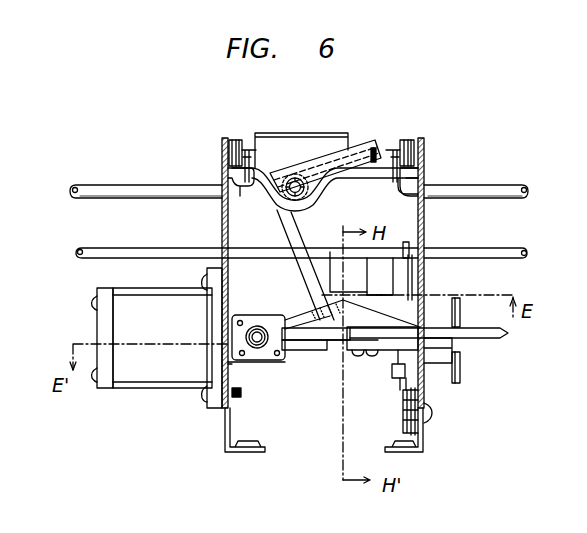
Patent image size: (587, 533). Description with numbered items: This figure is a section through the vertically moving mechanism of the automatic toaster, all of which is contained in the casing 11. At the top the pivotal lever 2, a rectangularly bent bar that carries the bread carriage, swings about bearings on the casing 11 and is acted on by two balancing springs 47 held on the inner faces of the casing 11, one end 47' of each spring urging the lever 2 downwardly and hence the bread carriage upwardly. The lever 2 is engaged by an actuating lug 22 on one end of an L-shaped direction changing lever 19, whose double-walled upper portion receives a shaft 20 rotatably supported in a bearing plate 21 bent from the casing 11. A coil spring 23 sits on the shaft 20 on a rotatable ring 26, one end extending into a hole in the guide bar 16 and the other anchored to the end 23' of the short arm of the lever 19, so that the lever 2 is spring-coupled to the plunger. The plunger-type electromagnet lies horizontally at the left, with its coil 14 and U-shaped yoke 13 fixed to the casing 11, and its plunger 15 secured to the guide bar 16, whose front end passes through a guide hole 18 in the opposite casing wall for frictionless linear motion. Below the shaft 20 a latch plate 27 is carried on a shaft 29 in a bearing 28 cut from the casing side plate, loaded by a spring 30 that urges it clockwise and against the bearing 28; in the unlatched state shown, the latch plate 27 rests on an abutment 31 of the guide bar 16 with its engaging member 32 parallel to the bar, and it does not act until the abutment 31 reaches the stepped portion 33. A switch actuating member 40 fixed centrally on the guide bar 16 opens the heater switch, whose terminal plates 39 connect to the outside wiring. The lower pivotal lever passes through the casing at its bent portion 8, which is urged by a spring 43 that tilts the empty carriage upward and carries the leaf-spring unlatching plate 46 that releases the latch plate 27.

The pivotal lever 2 is at (485, 193).
The bent portion of lever 3 8 is at (504, 249).
The casing 11 is at (424, 160).
The U-shaped yoke 13 is at (107, 386).
The coil 14 is at (162, 382).
The plunger 15 is at (264, 364).
The guide bar 16 is at (508, 333).
The guide hole 18 is at (440, 348).
The L-shaped direction changing lever 19 is at (356, 146).
The shaft 20 is at (297, 184).
The bearing plate 21 is at (276, 145).
The actuating lug 22 is at (377, 150).
The coil spring 23 is at (288, 265).
The end of the short arm 23' is at (395, 199).
The ring 26 is at (320, 190).
The latch plate 27 is at (396, 272).
The bearing 28 is at (240, 360).
The shaft 29 is at (248, 334).
The spring 30 is at (288, 318).
The abutment 31 is at (411, 362).
The engaging member 32 is at (345, 340).
The stepped portion 33 is at (314, 341).
The terminal plates 39 is at (460, 372).
The switch actuating member 40 is at (362, 352).
The spring 43 is at (420, 290).
The unlatching plate 46 is at (408, 257).
The balancing springs 47 is at (337, 144).
The end of balancing spring 47' is at (330, 175).